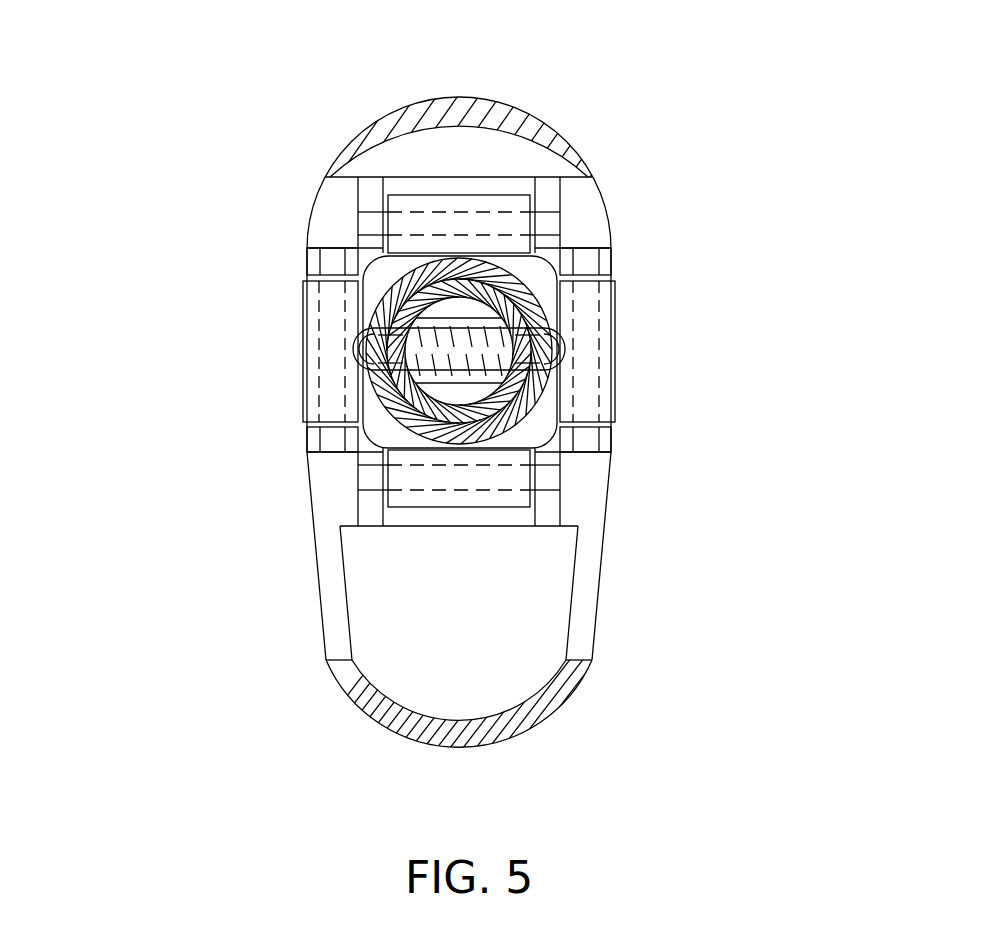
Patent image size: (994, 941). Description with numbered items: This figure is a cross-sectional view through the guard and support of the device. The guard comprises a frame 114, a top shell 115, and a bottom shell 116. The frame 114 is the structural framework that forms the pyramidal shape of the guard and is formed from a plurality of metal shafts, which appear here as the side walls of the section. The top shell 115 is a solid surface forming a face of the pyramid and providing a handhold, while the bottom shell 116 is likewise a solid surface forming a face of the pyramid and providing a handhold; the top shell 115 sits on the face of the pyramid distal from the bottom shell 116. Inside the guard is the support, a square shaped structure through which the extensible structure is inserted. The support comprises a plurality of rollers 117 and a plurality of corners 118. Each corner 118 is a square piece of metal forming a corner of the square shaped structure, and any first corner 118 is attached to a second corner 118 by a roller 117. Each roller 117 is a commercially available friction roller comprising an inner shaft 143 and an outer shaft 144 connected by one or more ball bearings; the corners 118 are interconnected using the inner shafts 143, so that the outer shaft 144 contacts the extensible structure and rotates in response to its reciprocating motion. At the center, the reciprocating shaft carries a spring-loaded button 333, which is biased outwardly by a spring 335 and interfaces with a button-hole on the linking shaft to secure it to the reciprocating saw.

The frame 114 is at (317, 592).
The top shell 115 is at (463, 113).
The bottom shell 116 is at (507, 738).
The roller 117 is at (503, 202).
The corner 118 is at (328, 225).
The inner shaft 143 is at (603, 342).
The outer shaft 144 is at (613, 383).
The spring-loaded button 333 is at (362, 348).
The spring 335 is at (451, 333).